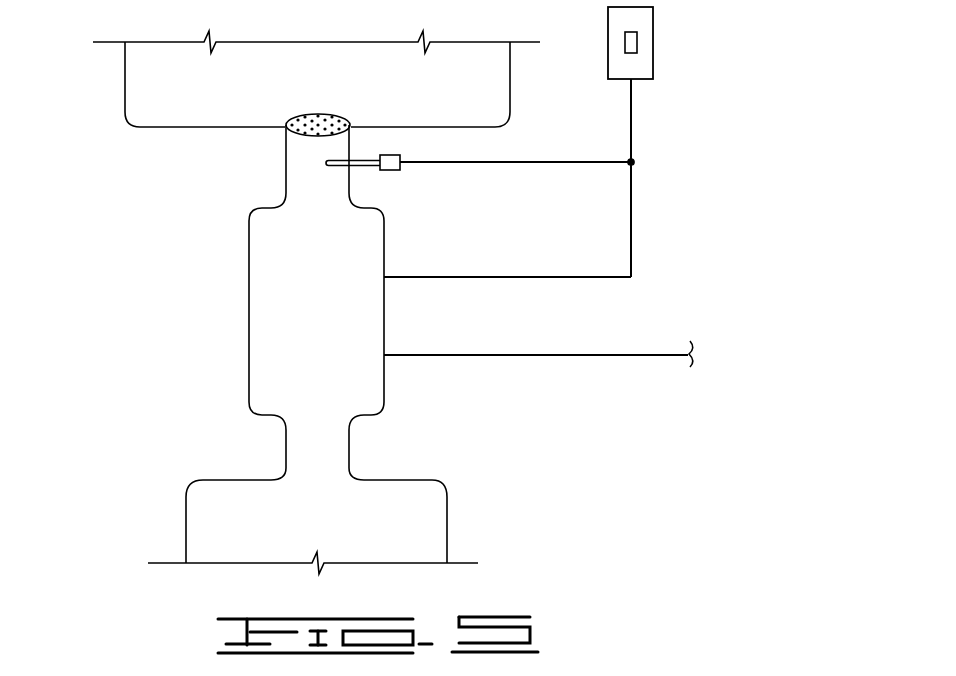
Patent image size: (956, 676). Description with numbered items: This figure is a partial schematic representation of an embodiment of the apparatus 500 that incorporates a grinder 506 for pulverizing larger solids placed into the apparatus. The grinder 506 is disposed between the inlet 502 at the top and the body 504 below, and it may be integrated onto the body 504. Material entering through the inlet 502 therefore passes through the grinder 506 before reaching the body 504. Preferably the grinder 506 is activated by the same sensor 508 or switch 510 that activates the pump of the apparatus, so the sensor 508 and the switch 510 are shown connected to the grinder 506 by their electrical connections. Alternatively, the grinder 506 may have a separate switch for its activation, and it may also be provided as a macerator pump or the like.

The apparatus 500 is at (322, 287).
The inlet 502 is at (319, 113).
The body 504 is at (447, 520).
The grinder 506 is at (249, 300).
The sensor 508 is at (396, 170).
The switch 510 is at (653, 45).